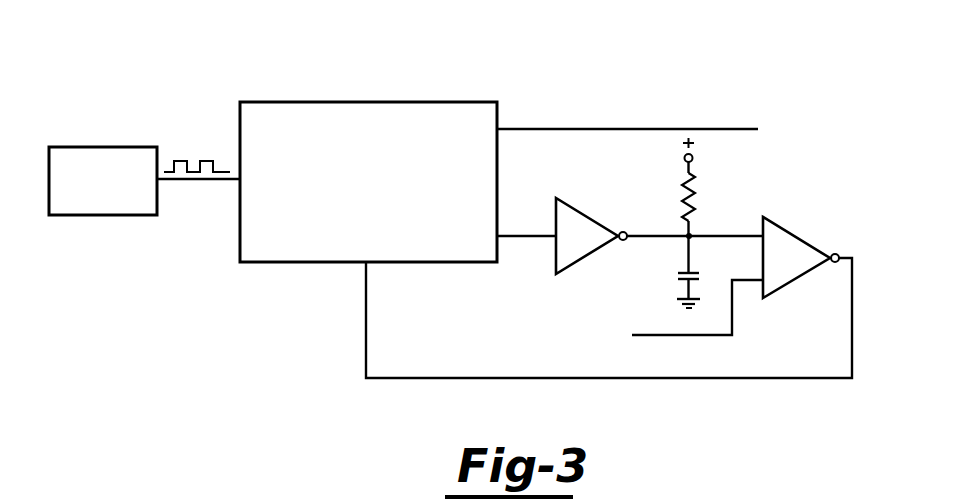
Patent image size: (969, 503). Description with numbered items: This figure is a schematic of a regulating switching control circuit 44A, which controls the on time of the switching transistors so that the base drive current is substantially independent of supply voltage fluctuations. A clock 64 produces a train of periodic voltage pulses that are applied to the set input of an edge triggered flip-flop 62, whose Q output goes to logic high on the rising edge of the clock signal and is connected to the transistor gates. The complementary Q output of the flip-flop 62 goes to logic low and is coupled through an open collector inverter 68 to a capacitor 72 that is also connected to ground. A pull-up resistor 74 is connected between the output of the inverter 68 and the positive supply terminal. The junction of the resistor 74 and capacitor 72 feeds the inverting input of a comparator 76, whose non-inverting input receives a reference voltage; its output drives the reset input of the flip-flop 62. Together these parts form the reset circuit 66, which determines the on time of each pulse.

The regulating switching control circuit 44A is at (570, 36).
The flip-flop 62 is at (382, 164).
The clock 64 is at (103, 165).
The reset circuit 66 is at (757, 193).
The open collector inverter 68 is at (555, 264).
The capacitor 72 is at (681, 279).
The pull-up resistor 74 is at (698, 196).
The comparator 76 is at (803, 237).